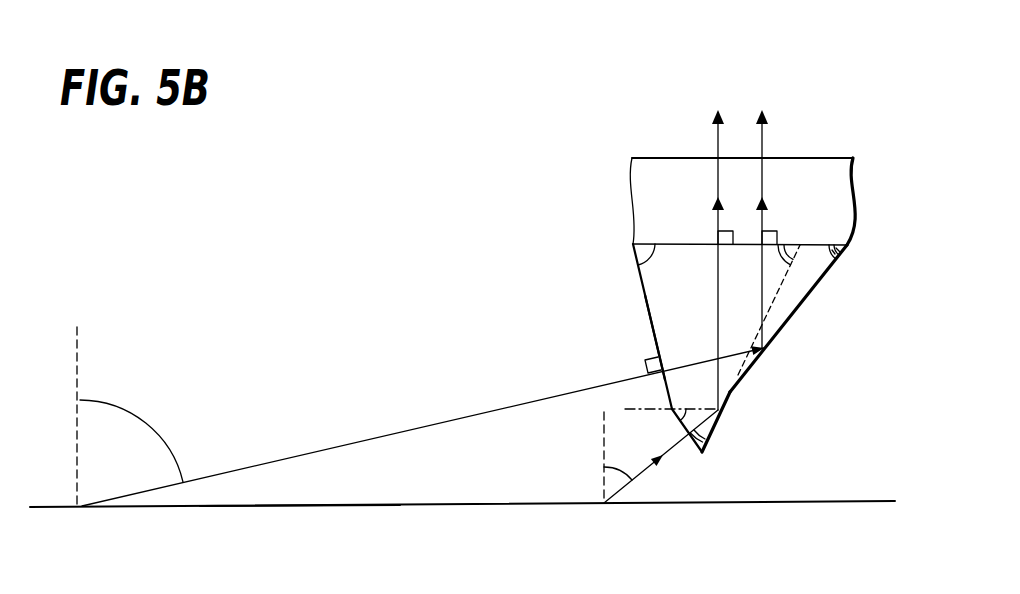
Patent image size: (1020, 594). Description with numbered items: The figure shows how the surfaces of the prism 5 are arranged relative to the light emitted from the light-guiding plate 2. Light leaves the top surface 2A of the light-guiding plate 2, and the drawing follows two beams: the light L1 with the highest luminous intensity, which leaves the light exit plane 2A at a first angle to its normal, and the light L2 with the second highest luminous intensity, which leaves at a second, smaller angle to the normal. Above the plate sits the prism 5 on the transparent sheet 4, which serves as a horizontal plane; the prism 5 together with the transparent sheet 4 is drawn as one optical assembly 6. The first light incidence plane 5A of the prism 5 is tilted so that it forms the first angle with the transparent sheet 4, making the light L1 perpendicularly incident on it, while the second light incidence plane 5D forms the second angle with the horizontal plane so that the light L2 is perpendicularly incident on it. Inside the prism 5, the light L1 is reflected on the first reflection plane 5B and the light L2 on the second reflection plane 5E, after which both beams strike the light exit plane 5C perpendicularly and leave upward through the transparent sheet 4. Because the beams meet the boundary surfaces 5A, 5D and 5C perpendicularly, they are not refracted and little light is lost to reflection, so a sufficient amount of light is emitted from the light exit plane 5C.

The light-guiding plate 2 is at (50, 540).
The top surface (light exit plane) of the light-guiding plate 2A is at (293, 498).
The transparent sheet 4 is at (827, 180).
The prism 5 is at (728, 348).
The first light incidence plane 5A is at (646, 337).
The first reflection plane 5B is at (787, 337).
The light exit plane 5C is at (647, 303).
The second light incidence plane 5D is at (670, 426).
The second reflection plane 5E is at (738, 397).
The optical element 6 is at (749, 305).
The light with highest luminous intensity L1 is at (490, 410).
The light with second highest luminous intensity L2 is at (643, 473).